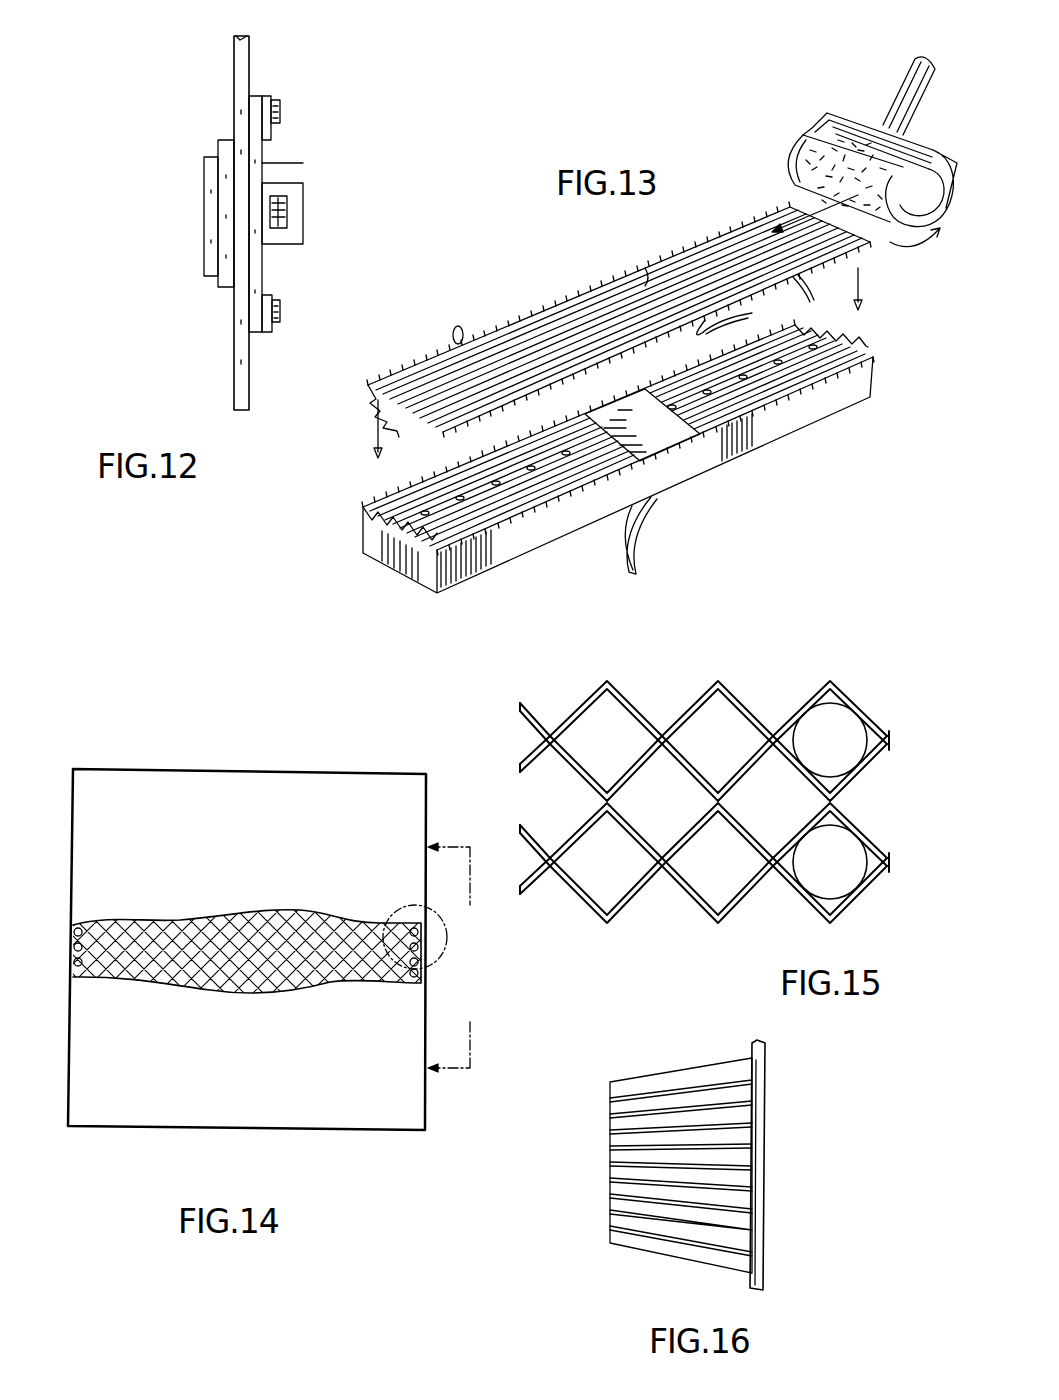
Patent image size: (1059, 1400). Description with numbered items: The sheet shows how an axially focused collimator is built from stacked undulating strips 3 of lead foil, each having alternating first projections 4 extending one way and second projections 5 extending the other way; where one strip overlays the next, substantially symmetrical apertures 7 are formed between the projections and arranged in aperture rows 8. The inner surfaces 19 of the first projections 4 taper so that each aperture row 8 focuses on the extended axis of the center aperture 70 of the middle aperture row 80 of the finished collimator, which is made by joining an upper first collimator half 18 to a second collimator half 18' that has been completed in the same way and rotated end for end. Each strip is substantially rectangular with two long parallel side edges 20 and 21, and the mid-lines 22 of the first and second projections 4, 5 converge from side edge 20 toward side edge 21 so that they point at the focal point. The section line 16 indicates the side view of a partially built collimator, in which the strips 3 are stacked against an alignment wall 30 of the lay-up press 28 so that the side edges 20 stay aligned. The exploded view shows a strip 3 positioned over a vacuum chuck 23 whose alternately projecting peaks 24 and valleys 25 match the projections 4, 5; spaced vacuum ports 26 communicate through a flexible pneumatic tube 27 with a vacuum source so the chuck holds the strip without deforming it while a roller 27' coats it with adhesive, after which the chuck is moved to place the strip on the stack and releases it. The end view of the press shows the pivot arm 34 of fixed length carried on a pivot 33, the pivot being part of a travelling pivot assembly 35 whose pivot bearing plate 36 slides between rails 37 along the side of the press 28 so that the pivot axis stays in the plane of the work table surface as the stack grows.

In FIG. 13, the undulating strip 3 is at (410, 380).
In FIG. 15, the undulating strip 3 is at (840, 697).
In FIG. 16, the undulating strip 3 is at (753, 1110).
In FIG. 13, the first projections 4 is at (456, 328).
In FIG. 15, the first projections 4 is at (597, 690).
In FIG. 16, the first projections 4 is at (658, 1075).
In FIG. 13, the second projections 5 is at (808, 302).
In FIG. 15, the second projections 5 is at (650, 725).
In FIG. 16, the second projections 5 is at (695, 1105).
In FIG. 15, the apertures 7 is at (603, 865).
In FIG. 14, the aperture rows 8 is at (423, 932).
In FIG. 14, the section line 16 is at (451, 956).
In FIG. 14, the upper first collimator half 18 is at (222, 949).
In FIG. 14, the second collimator half 18' is at (70, 1077).
In FIG. 15, the inner surfaces 19 is at (590, 715).
In FIG. 13, the side edge 20 is at (845, 250).
In FIG. 16, the side edge 20 is at (760, 1195).
In FIG. 13, the side edge 21 is at (567, 312).
In FIG. 16, the side edge 21 is at (608, 1192).
In FIG. 13, the mid-lines 22 is at (645, 270).
In FIG. 15, the mid-lines 22 is at (612, 688).
In FIG. 13, the vacuum chuck 23 is at (808, 412).
In FIG. 13, the peaks 24 is at (840, 355).
In FIG. 13, the valleys 25 is at (523, 528).
In FIG. 13, the vacuum ports 26 is at (490, 480).
In FIG. 13, the flexible pneumatic tube 27 is at (682, 535).
In FIG. 13, the roller 27' is at (863, 173).
In FIG. 12, the lay-up press 28 is at (246, 54).
In FIG. 16, the alignment wall 30 is at (760, 1163).
In FIG. 12, the pivot 33 is at (204, 196).
In FIG. 12, the pivot arm 34 is at (225, 136).
In FIG. 12, the travelling pivot assembly 35 is at (275, 86).
In FIG. 12, the pivot bearing plate 36 is at (264, 162).
In FIG. 12, the rails 37 is at (258, 112).
In FIG. 14, the center aperture 70 is at (247, 940).
In FIG. 14, the middle aperture row 80 is at (425, 940).